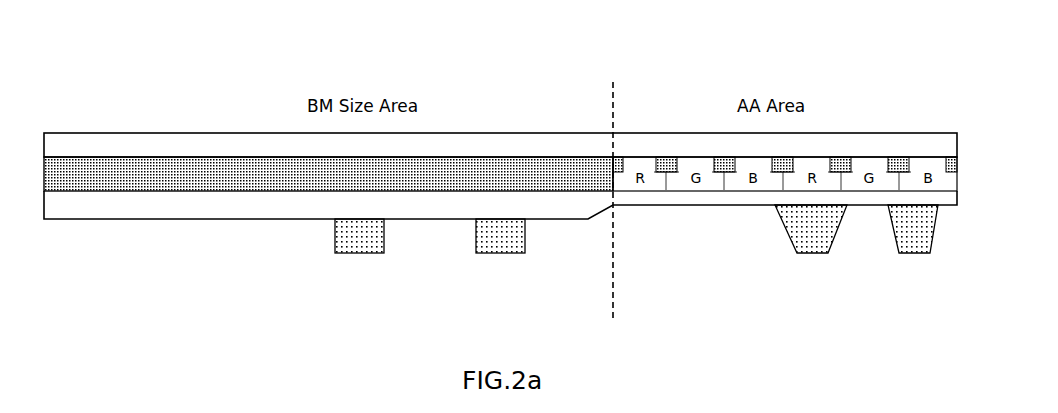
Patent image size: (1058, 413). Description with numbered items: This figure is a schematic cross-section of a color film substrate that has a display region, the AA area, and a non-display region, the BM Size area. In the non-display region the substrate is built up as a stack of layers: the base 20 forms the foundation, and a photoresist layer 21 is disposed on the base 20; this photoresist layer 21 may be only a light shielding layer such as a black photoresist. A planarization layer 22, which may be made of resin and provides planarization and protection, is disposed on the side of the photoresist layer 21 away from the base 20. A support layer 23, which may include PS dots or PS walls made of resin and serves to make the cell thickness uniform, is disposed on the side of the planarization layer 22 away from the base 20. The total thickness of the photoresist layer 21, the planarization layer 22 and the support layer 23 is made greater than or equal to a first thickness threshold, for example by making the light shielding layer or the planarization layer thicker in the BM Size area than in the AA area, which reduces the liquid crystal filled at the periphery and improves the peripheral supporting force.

The base 20 is at (540, 143).
The photoresist layer 21 is at (177, 172).
The planarization layer 22 is at (67, 206).
The support layer 23 is at (357, 233).